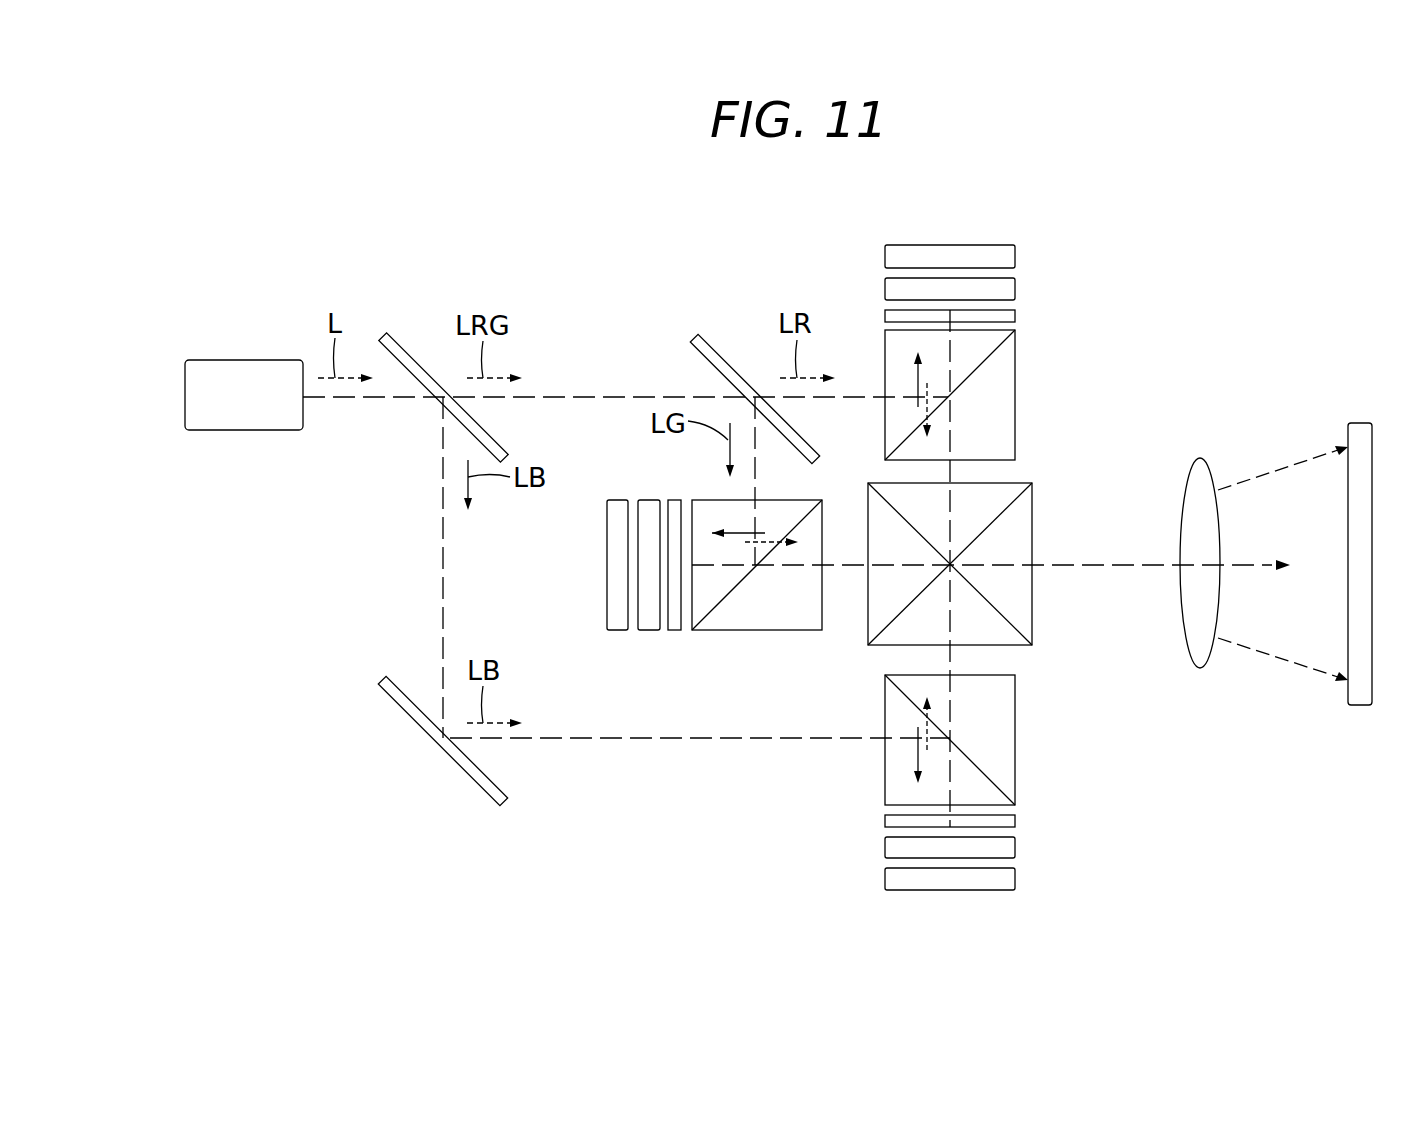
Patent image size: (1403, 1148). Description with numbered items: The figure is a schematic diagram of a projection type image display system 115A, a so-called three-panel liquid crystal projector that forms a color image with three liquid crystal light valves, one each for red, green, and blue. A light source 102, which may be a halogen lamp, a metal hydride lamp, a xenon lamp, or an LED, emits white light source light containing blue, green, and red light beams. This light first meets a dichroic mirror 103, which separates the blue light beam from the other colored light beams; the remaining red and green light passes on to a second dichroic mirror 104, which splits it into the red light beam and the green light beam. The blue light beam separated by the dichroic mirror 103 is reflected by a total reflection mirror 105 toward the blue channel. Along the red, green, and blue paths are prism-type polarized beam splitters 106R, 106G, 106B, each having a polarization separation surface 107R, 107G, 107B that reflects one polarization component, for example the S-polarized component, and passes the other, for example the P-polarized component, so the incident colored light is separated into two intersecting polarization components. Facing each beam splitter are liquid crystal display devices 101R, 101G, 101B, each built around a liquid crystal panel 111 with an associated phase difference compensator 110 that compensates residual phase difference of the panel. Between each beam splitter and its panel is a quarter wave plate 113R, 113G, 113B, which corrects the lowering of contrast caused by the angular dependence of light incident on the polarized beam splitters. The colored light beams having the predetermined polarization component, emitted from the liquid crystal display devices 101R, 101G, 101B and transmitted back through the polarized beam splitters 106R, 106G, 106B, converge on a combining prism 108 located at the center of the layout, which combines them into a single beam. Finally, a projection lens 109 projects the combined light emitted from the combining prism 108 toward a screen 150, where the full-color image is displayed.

The light source 102 is at (250, 360).
The dichroic mirror 103 is at (412, 347).
The dichroic mirror 104 is at (723, 352).
The total reflection mirror 105 is at (410, 692).
The polarized beam splitter 106R is at (1011, 440).
The polarized beam splitter 106G is at (793, 622).
The polarized beam splitter 106B is at (1011, 702).
The polarization separation surface 107R is at (988, 362).
The polarization separation surface 107G is at (720, 602).
The polarization separation surface 107B is at (985, 775).
The combining prism 108 is at (1027, 627).
The projection lens 109 is at (1200, 668).
The phase difference compensator 110 is at (651, 627).
The liquid crystal panel 111 is at (615, 627).
The quarter wave plate 113R is at (886, 313).
The quarter wave plate 113G is at (673, 498).
The quarter wave plate 113B is at (886, 826).
The liquid crystal display device 101R is at (1104, 242).
The liquid crystal display device 101G is at (670, 686).
The liquid crystal display device 101B is at (1104, 830).
The projection type image display system 115A is at (357, 758).
The screen 150 is at (1360, 706).